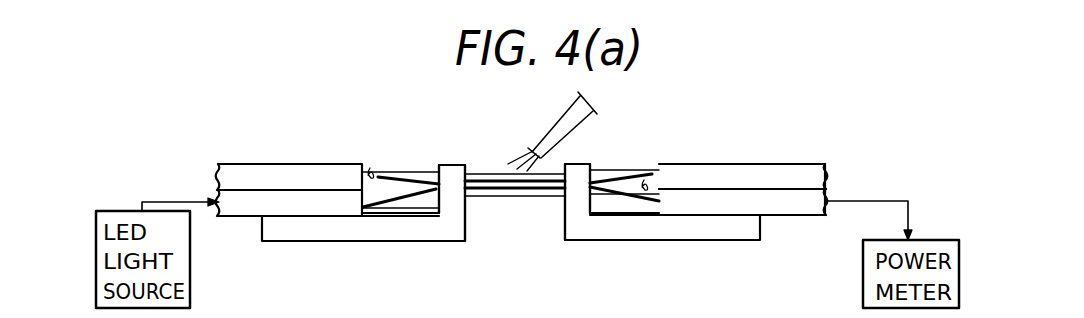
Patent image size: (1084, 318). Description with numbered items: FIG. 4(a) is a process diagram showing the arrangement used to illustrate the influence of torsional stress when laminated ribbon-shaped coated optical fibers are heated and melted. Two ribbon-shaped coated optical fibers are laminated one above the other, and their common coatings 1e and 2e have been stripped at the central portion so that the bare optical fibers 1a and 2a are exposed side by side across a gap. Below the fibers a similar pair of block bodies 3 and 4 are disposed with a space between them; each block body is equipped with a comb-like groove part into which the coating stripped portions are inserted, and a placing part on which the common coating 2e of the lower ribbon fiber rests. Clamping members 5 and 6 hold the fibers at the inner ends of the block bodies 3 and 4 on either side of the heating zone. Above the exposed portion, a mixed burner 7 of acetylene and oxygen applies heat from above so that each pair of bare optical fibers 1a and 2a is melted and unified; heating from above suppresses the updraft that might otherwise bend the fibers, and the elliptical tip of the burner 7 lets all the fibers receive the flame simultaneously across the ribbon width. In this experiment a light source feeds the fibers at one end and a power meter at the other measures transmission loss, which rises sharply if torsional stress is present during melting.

The common coating 1e is at (308, 176).
The bare optical fiber 1a is at (400, 177).
The common coating 2e is at (295, 207).
The bare optical fiber 2a is at (404, 198).
The block body 3 is at (352, 228).
The block body 4 is at (642, 230).
The left fiber clamp 5 is at (452, 165).
The right fiber clamp 6 is at (578, 164).
The mixed burner 7 is at (558, 122).